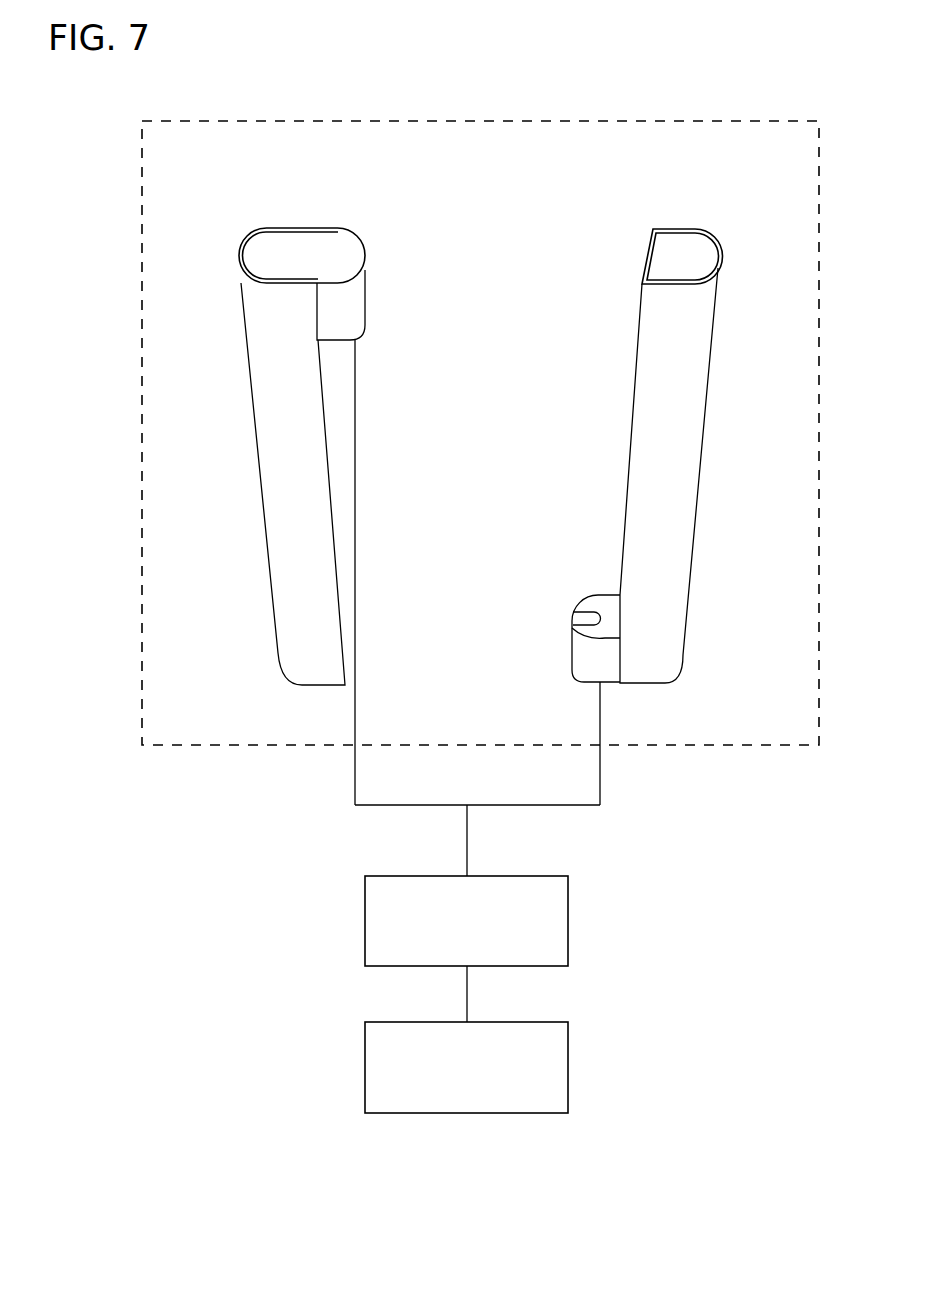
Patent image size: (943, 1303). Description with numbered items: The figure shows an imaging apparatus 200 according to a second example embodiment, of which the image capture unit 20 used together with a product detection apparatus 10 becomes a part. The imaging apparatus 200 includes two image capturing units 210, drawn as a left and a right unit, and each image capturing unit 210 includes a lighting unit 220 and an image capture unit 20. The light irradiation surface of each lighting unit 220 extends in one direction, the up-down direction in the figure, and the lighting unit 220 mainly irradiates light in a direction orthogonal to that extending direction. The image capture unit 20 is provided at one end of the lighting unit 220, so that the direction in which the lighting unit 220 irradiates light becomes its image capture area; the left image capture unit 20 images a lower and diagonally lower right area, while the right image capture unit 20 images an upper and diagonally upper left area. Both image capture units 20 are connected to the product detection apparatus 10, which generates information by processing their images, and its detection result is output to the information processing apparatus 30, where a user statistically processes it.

The imaging apparatus 200 is at (607, 121).
The image capturing unit 210 is at (313, 222).
The lighting unit 220 is at (266, 432).
The image capture unit 20 is at (358, 298).
The product detection apparatus 10 is at (568, 922).
The information processing apparatus 30 is at (568, 1070).